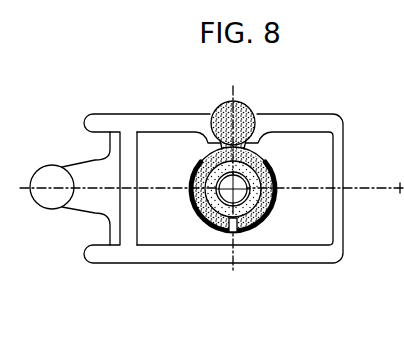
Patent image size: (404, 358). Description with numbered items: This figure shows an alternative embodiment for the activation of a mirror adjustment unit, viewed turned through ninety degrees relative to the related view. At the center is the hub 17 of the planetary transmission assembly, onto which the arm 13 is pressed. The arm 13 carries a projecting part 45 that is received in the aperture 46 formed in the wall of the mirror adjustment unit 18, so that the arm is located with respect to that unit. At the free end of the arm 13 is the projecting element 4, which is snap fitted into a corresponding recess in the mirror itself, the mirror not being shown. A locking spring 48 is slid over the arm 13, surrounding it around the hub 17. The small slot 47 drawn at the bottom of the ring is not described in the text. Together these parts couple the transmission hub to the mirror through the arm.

The projecting element 4 is at (44, 167).
The arm 13 is at (197, 219).
The hub 17 is at (277, 197).
The mirror adjustment unit 18 is at (330, 253).
The projecting part 45 is at (218, 108).
The aperture 46 is at (258, 134).
The slot 47 is at (230, 229).
The locking spring 48 is at (244, 223).